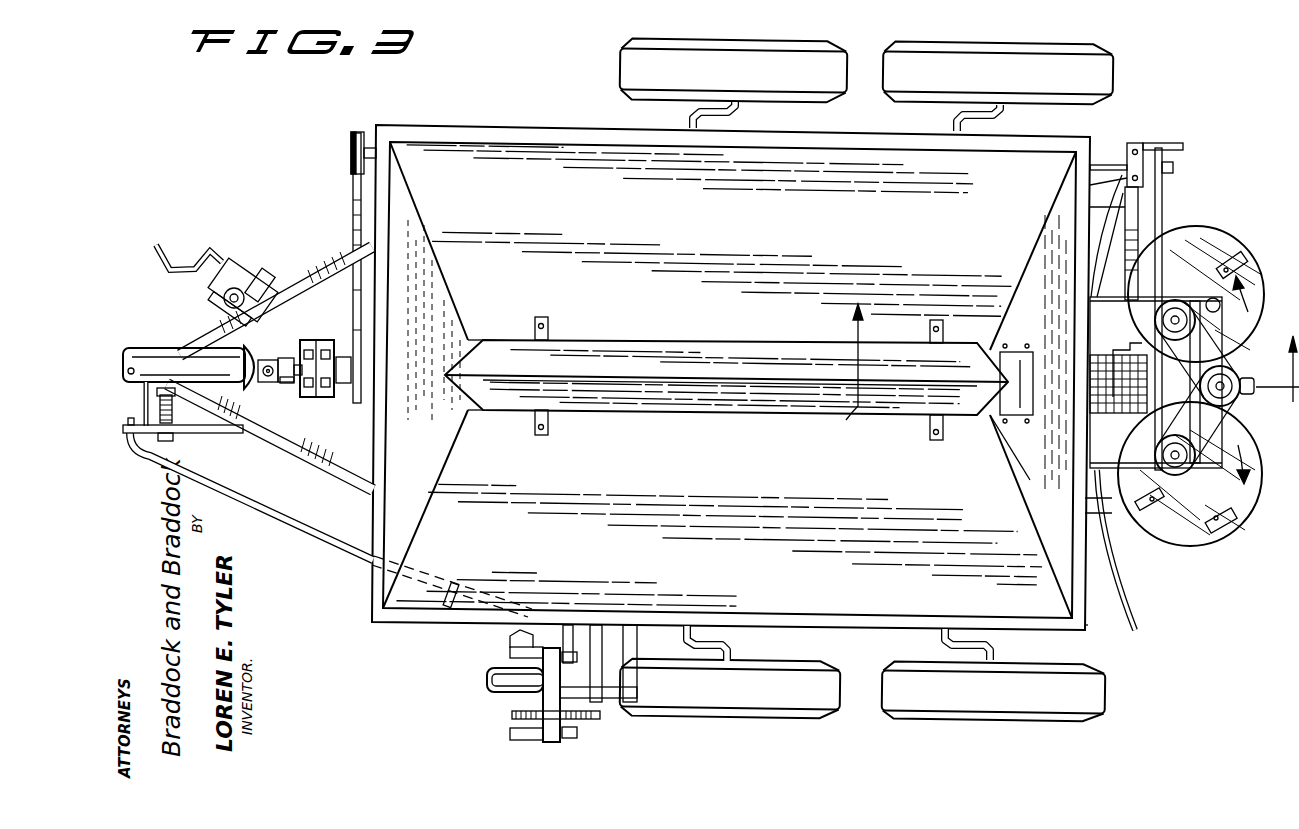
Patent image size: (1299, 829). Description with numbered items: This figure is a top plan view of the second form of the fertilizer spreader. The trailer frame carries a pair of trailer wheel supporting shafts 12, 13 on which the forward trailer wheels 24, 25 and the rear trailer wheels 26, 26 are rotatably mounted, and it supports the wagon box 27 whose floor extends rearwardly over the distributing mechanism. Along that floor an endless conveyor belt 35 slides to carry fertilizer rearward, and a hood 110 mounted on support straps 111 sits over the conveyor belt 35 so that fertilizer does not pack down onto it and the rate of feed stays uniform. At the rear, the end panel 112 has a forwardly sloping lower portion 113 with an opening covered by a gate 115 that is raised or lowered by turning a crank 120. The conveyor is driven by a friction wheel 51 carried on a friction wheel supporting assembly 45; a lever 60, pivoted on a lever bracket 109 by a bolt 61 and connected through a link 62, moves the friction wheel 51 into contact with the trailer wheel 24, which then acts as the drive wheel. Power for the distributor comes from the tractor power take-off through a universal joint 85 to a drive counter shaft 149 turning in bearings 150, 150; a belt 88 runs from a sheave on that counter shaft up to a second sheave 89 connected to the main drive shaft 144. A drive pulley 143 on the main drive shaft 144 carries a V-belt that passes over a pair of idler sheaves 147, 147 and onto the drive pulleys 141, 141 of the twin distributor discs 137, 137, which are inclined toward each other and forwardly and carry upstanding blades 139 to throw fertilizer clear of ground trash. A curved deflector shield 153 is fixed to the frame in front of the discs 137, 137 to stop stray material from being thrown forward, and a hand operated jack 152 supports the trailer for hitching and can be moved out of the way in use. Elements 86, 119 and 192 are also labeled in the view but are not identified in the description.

The trailer wheel supporting shaft 12 is at (686, 115).
The trailer wheel supporting shaft 13 is at (953, 123).
The forward trailer wheel 24 is at (830, 715).
The forward trailer wheel 25 is at (832, 48).
The rear trailer wheel 26 is at (918, 48).
The wagon box 27 is at (510, 128).
The endless conveyor belt 35 is at (1100, 405).
The friction wheel supporting assembly 45 is at (512, 712).
The friction wheel 51 is at (487, 678).
The lever 60 is at (230, 433).
The bolt 61 is at (165, 441).
The link 62 is at (280, 514).
The universal joint 85 is at (278, 356).
The drive shaft tube 86 is at (155, 350).
The belt 88 is at (352, 222).
The second sheave 89 is at (350, 136).
The lever bracket 109 is at (225, 404).
The hood 110 is at (850, 425).
The support straps 111 is at (562, 318).
The rear end panel 112 is at (1086, 627).
The forwardly sloping lower portion 113 is at (1060, 238).
The gate 115 is at (1000, 420).
The end plate 119 is at (1000, 360).
The crank 120 is at (1135, 340).
The twin distributor discs 137 is at (1200, 232).
The blades 139 is at (1250, 276).
The drive pulleys 141 is at (1205, 300).
The drive pulley 143 is at (1168, 165).
The main drive shaft 144 is at (1105, 163).
The idler sheaves 147 is at (1140, 410).
The drive counter shaft 149 is at (290, 385).
The bearings 150 is at (338, 346).
The hand operated jack 152 is at (242, 272).
The curved deflector shield 153 is at (1110, 597).
The upright bar 192 is at (1160, 220).